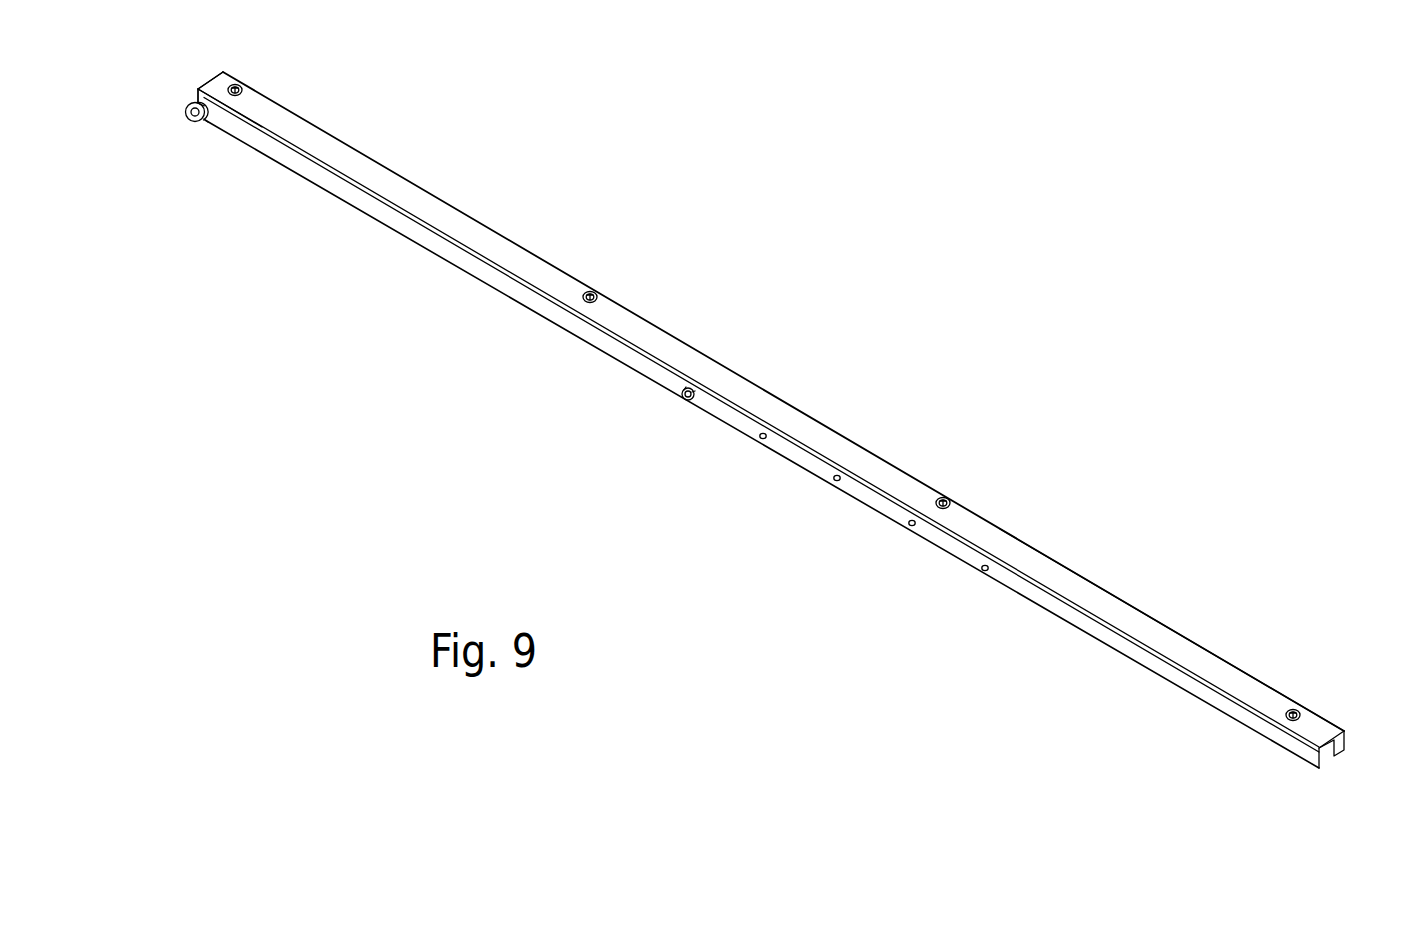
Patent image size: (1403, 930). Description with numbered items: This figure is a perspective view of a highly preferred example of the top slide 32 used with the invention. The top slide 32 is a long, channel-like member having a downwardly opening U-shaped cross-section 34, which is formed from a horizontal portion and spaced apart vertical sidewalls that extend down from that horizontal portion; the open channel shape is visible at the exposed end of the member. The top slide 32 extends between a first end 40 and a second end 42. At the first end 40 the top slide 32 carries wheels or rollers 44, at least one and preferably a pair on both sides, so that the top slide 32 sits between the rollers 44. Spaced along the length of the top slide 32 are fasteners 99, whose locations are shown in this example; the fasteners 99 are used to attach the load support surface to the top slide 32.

The top slide 32 is at (782, 397).
The downwardly opening U-shaped cross-section 34 is at (1323, 757).
The first end 40 is at (248, 88).
The second end 42 is at (1275, 687).
The rollers 44 is at (210, 127).
The fasteners 99 is at (597, 298).